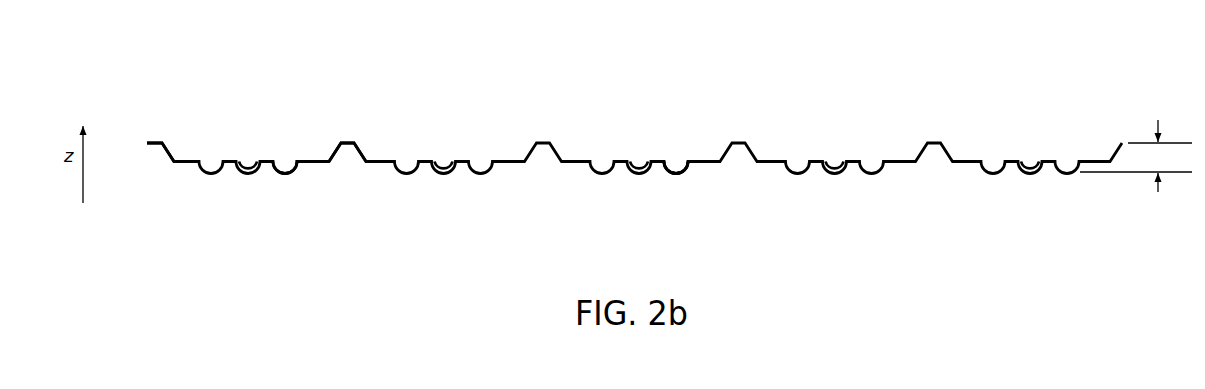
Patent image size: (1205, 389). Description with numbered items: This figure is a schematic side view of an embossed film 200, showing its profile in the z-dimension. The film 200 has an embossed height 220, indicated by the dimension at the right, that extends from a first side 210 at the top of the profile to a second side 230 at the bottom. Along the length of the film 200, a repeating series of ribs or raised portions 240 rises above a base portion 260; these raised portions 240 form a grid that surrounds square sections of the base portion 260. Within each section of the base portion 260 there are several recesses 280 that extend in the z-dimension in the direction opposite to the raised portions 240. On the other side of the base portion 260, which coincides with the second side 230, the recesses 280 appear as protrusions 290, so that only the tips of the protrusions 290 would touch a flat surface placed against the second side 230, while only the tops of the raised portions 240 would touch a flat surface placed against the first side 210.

The film 200 is at (166, 60).
The first side 210 is at (271, 116).
The embossed height 220 is at (1136, 156).
The second side 230 is at (271, 205).
The raised portions 240 is at (352, 142).
The base portion 260 is at (510, 161).
The recesses 280 is at (678, 167).
The protrusions 290 is at (678, 175).